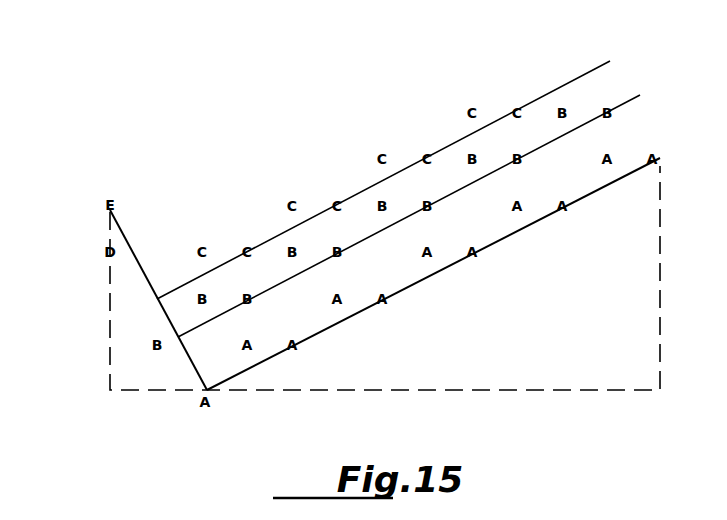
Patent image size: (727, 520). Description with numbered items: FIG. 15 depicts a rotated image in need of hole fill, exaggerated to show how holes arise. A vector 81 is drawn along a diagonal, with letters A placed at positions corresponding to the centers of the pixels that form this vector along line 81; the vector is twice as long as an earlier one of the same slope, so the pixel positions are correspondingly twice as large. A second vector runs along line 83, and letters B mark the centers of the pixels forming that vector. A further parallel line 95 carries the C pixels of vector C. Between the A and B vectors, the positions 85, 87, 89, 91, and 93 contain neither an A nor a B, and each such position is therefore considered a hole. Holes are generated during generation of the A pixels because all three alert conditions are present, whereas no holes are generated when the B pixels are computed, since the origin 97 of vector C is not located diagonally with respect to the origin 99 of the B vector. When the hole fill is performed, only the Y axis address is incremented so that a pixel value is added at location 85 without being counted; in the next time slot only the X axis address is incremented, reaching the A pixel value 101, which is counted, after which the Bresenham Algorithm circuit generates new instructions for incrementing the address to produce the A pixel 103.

The vector 81 is at (551, 215).
The line 83 is at (548, 140).
The third diagonal line 95 is at (497, 118).
The hole position 85 is at (201, 351).
The hole position 87 is at (300, 301).
The hole position 89 is at (390, 255).
The hole position 91 is at (480, 208).
The hole position 93 is at (572, 162).
The origin of vector C 97 is at (150, 303).
The origin of vector B 99 is at (150, 347).
The A pixel value 101 is at (251, 352).
The A pixel 103 is at (303, 343).